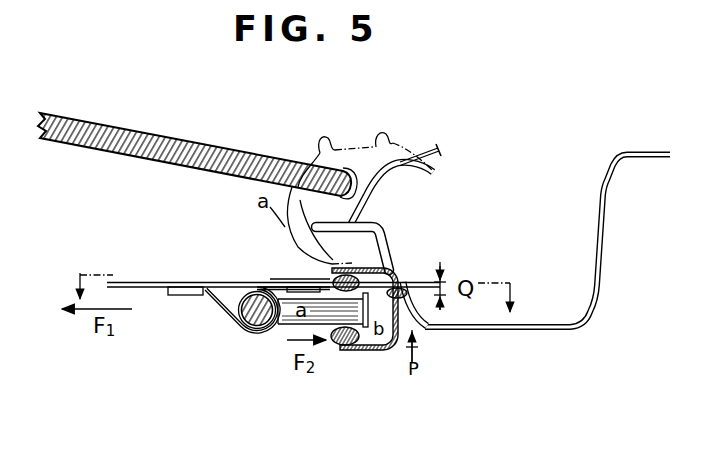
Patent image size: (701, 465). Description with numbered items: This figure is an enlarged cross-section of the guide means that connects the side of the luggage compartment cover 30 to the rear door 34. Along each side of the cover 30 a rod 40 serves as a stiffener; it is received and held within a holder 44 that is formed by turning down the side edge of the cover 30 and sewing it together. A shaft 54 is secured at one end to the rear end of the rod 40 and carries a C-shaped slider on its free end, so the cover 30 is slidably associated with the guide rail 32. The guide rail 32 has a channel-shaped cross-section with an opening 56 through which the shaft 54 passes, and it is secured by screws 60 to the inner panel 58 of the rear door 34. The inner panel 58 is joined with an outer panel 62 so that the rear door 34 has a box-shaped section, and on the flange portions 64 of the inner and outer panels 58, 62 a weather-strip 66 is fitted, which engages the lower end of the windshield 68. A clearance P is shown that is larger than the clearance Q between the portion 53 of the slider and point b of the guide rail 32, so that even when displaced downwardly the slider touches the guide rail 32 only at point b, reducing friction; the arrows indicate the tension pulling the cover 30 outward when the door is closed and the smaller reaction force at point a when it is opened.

The luggage compartment cover 30 is at (167, 281).
The guide rail 32 is at (383, 351).
The rear door 34 is at (574, 180).
The rod 40 is at (273, 322).
The holder 44 is at (242, 328).
The portion of the slider 53 is at (368, 247).
The shaft 54 is at (273, 287).
The opening 56 is at (325, 281).
The inner panel 58 is at (388, 251).
The screws 60 is at (411, 300).
The outer panel 62 is at (428, 141).
The flange portions 64 is at (390, 143).
The weather-strip 66 is at (322, 140).
The windshield 68 is at (213, 147).